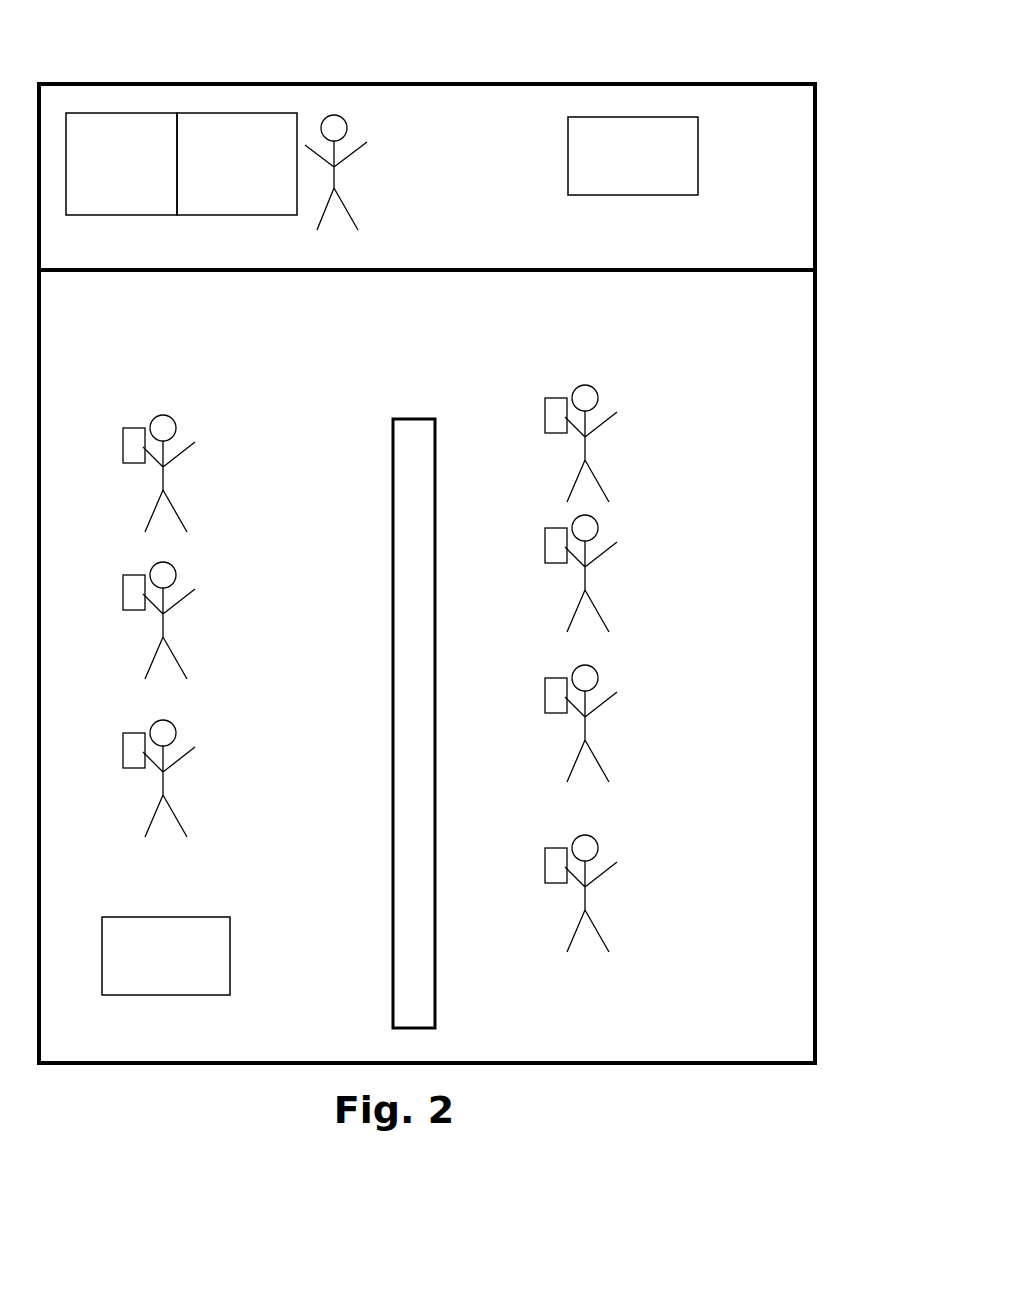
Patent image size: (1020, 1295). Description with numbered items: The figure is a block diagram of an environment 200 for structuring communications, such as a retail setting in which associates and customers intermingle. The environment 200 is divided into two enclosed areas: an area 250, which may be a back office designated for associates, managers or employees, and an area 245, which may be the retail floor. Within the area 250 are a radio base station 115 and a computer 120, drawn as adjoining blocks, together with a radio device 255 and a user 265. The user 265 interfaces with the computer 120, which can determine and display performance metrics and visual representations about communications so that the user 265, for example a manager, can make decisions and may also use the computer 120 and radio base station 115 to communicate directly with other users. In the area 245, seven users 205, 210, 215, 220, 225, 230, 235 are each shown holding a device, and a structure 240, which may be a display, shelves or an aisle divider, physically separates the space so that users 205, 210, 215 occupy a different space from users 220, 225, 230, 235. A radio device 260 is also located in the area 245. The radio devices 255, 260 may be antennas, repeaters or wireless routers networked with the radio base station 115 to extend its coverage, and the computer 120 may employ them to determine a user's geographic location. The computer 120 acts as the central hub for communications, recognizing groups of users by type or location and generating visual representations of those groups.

The environment 200 is at (461, 532).
The radio base station 115 is at (121, 164).
The computer 120 is at (237, 164).
The user 205 is at (187, 468).
The user 210 is at (197, 627).
The user 215 is at (197, 785).
The user 220 is at (618, 450).
The user 225 is at (618, 592).
The user 230 is at (618, 730).
The user 235 is at (618, 900).
The structure 240 is at (407, 977).
The area 245 is at (405, 344).
The area 250 is at (476, 132).
The radio device 255 is at (633, 156).
The radio device 260 is at (166, 956).
The user 265 is at (353, 175).